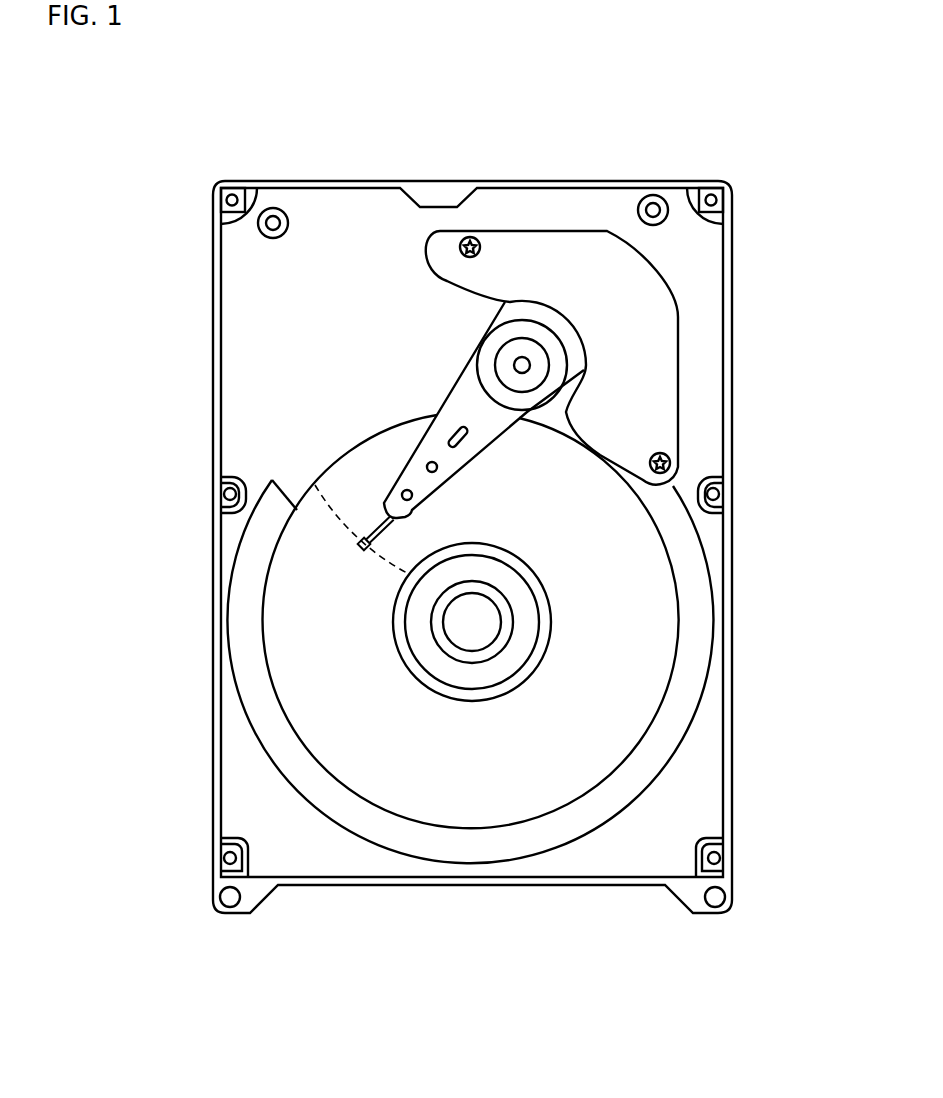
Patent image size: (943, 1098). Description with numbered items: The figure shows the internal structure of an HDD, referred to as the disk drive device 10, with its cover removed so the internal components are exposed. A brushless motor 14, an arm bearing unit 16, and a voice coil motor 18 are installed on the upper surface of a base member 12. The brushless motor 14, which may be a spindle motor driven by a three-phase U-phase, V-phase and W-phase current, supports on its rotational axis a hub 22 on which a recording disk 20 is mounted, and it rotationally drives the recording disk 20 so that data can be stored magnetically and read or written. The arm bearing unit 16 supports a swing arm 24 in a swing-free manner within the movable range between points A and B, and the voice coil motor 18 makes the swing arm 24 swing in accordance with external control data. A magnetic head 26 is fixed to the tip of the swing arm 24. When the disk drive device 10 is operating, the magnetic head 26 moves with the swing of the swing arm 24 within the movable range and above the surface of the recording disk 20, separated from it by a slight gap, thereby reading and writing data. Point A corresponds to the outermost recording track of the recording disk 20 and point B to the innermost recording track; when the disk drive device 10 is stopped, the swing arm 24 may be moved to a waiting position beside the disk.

The disk drive device 10 is at (582, 142).
The base member 12 is at (732, 278).
The brushless motor 14 is at (540, 594).
The arm bearing unit 16 is at (567, 370).
The voice coil motor 18 is at (650, 262).
The recording disk 20 is at (650, 658).
The hub 22 is at (513, 655).
The swing arm 24 is at (450, 400).
The magnetic head 26 is at (360, 543).